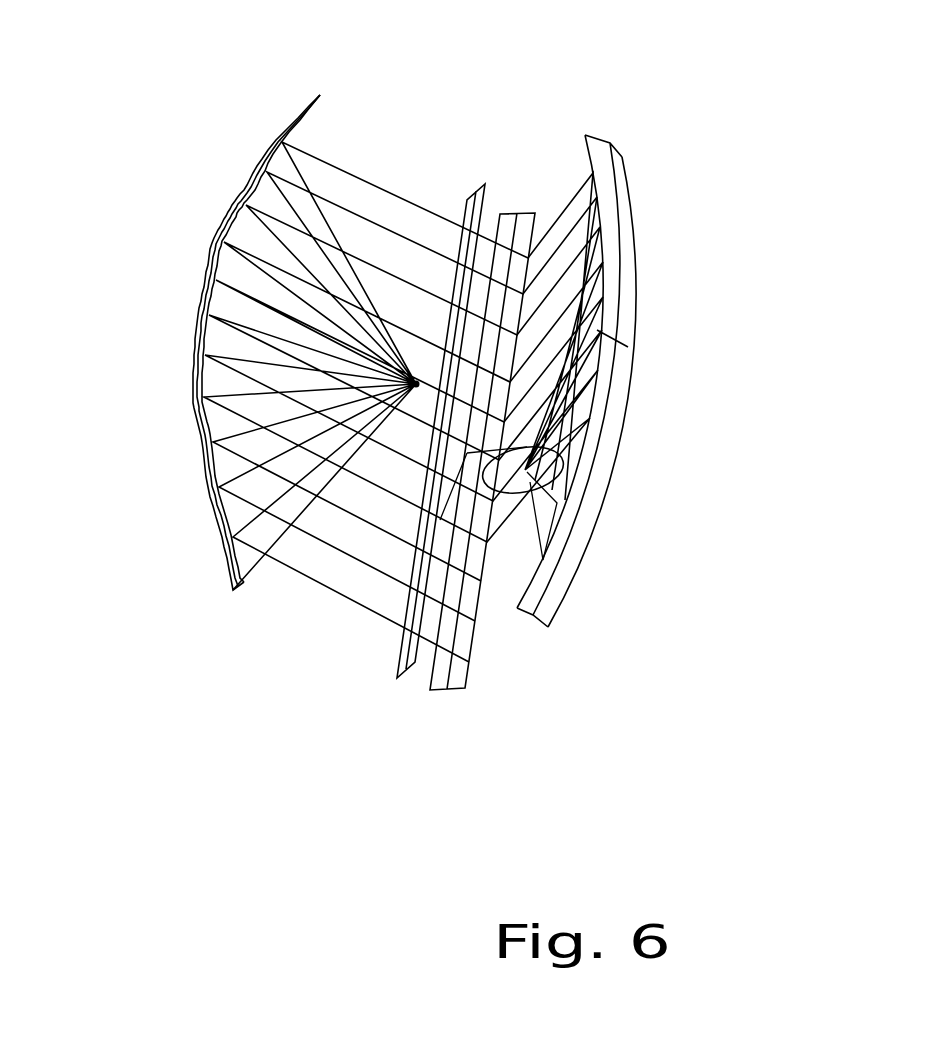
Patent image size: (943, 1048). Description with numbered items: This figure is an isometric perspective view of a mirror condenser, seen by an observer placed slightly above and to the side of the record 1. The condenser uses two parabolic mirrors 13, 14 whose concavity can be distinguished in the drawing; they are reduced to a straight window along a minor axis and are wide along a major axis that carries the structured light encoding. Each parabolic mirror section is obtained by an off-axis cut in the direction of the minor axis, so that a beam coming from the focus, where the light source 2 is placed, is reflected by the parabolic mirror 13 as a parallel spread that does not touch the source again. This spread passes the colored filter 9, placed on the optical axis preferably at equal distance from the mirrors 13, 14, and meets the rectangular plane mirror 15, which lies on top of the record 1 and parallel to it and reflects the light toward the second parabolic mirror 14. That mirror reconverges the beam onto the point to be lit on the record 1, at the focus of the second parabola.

The record 1 is at (563, 479).
The light source 2 is at (416, 382).
The colored filter 9 is at (387, 675).
The parabolic mirror 13 is at (210, 220).
The second parabolic mirror 14 is at (638, 182).
The plane mirror 15 is at (478, 683).